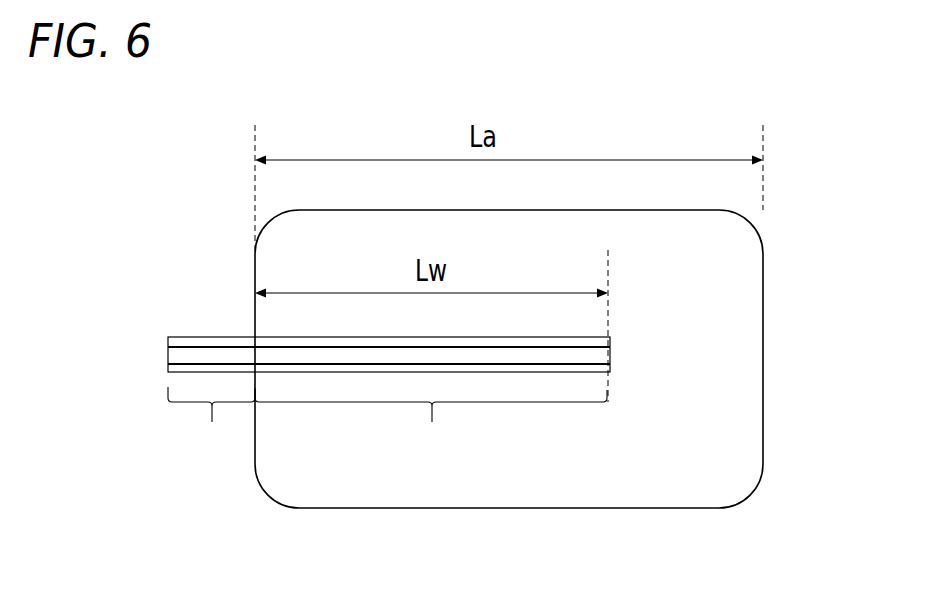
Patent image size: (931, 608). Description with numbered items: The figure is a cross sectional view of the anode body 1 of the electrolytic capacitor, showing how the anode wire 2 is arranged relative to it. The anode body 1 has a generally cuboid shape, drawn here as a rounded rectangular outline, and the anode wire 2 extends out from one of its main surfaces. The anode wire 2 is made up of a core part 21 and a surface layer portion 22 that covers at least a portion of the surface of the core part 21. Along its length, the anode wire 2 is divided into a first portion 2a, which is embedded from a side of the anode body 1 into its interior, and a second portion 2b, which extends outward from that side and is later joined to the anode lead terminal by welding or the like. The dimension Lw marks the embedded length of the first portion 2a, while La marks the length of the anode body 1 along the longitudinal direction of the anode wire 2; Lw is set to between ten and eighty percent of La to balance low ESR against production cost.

The anode body 1 is at (485, 448).
The anode wire 2 is at (505, 426).
The first portion 2a is at (431, 428).
The second portion 2b is at (211, 427).
The core part 21 is at (570, 356).
The surface layer portion 22 is at (610, 371).